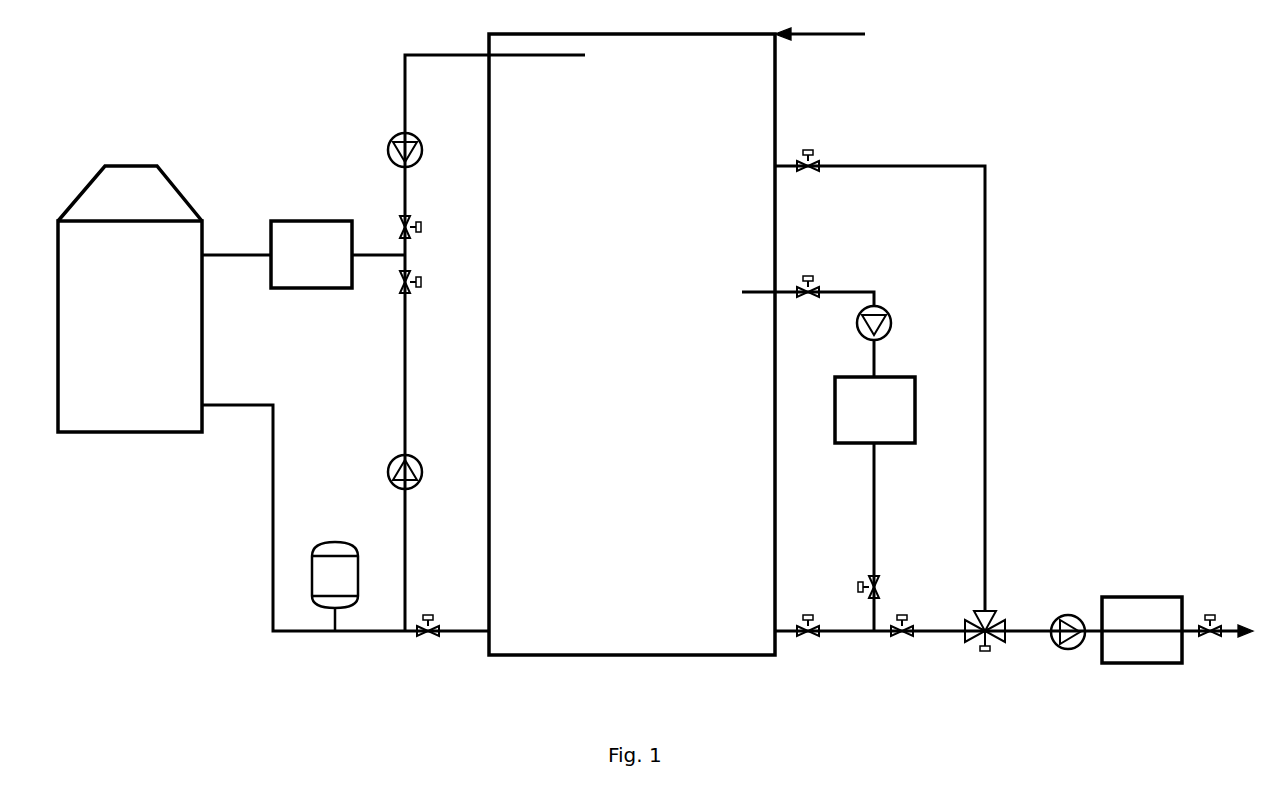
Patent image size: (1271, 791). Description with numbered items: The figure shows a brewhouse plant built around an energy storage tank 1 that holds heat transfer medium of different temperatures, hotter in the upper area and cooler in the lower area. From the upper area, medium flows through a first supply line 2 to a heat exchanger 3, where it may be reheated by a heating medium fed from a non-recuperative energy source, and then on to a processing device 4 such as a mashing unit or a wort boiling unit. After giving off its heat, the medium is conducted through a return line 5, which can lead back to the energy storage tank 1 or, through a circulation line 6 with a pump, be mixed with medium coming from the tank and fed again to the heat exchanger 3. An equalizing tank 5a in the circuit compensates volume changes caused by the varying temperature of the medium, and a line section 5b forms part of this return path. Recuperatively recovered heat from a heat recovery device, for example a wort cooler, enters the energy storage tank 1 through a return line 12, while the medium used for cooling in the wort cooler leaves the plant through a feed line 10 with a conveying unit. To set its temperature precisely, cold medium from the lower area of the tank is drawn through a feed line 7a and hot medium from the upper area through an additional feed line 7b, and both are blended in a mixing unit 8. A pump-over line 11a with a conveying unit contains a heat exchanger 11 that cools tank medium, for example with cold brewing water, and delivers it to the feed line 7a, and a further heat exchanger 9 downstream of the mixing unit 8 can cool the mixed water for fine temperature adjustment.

The energy storage tank 1 is at (632, 344).
The first supply line 2 is at (483, 328).
The heat exchanger 3 is at (303, 254).
The processing device 4 is at (130, 299).
The return line 5 is at (345, 536).
The equalizing tank 5a is at (335, 586).
The line section 5b is at (444, 641).
The circulation line 6 is at (392, 472).
The feed line 7a is at (809, 648).
The additional feed line 7b is at (880, 361).
The mixing unit 8 is at (981, 620).
The heat exchanger 9 is at (1142, 630).
The feed line 10 is at (1228, 645).
The heat exchanger 11 is at (875, 410).
The pump-over line 11a is at (850, 537).
The return line 12 is at (838, 37).